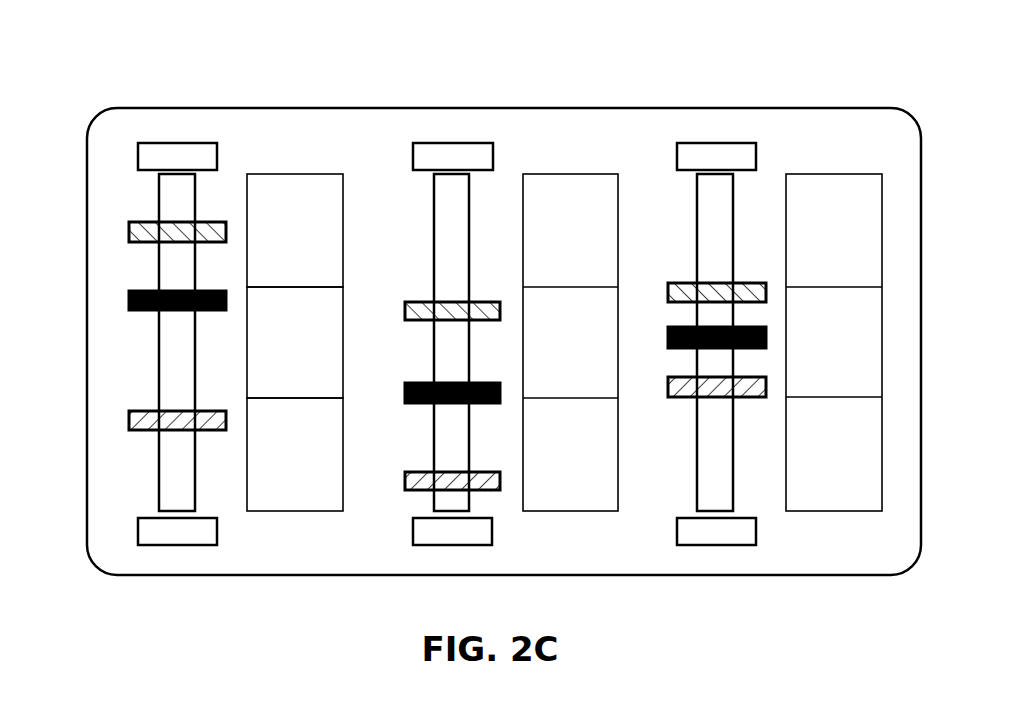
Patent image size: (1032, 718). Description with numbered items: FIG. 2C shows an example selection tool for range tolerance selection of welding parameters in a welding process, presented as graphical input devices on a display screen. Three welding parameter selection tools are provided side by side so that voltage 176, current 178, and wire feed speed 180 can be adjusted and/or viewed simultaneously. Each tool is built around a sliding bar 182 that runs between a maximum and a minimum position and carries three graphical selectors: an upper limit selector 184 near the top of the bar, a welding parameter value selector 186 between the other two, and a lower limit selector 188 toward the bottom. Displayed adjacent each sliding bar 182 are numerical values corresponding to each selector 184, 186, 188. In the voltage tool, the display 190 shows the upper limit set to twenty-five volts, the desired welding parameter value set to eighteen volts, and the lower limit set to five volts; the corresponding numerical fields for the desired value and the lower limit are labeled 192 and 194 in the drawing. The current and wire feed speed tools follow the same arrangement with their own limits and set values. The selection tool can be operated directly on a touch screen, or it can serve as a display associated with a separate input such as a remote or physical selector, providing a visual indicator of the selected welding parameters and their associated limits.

The voltage 176 is at (122, 103).
The current 178 is at (403, 103).
The wire feed speed 180 is at (665, 103).
The sliding bar 182 is at (157, 185).
The upper limit selector 184 is at (129, 226).
The welding parameter value selector 186 is at (129, 295).
The lower limit selector 188 is at (129, 414).
The display 190 is at (343, 240).
The set point value field 192 is at (343, 353).
The lower limit value field 194 is at (343, 456).